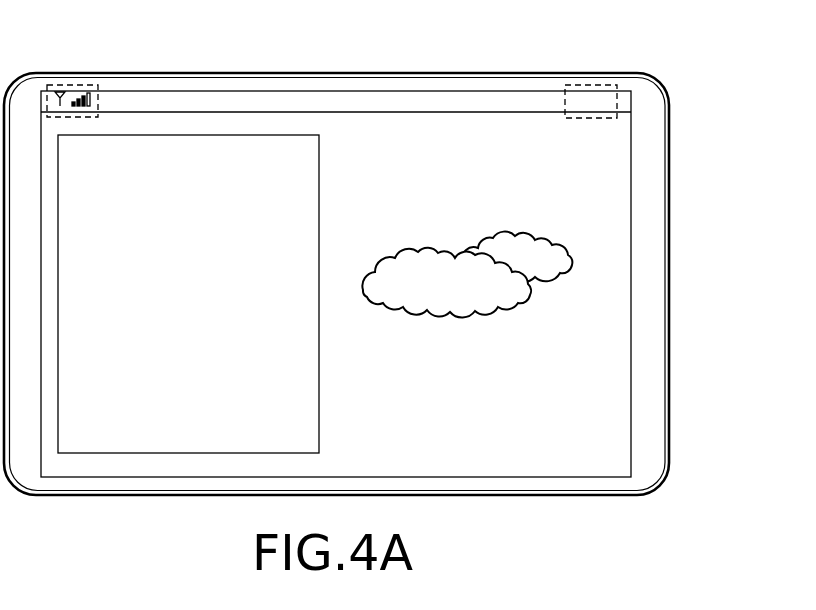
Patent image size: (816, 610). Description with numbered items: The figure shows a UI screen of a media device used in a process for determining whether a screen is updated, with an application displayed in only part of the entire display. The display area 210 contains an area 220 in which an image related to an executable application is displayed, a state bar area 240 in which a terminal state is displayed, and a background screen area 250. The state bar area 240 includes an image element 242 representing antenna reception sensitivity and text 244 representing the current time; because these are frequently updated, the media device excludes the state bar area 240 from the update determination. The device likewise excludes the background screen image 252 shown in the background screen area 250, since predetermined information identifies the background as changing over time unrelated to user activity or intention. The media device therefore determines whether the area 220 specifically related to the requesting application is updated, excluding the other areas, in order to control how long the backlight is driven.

The display area 210 is at (631, 215).
The application area 220 is at (320, 203).
The state bar area 240 is at (631, 102).
The image element 242 is at (73, 86).
The text representing current time 244 is at (592, 86).
The background screen area 250 is at (600, 325).
The background screen image 252 is at (457, 312).